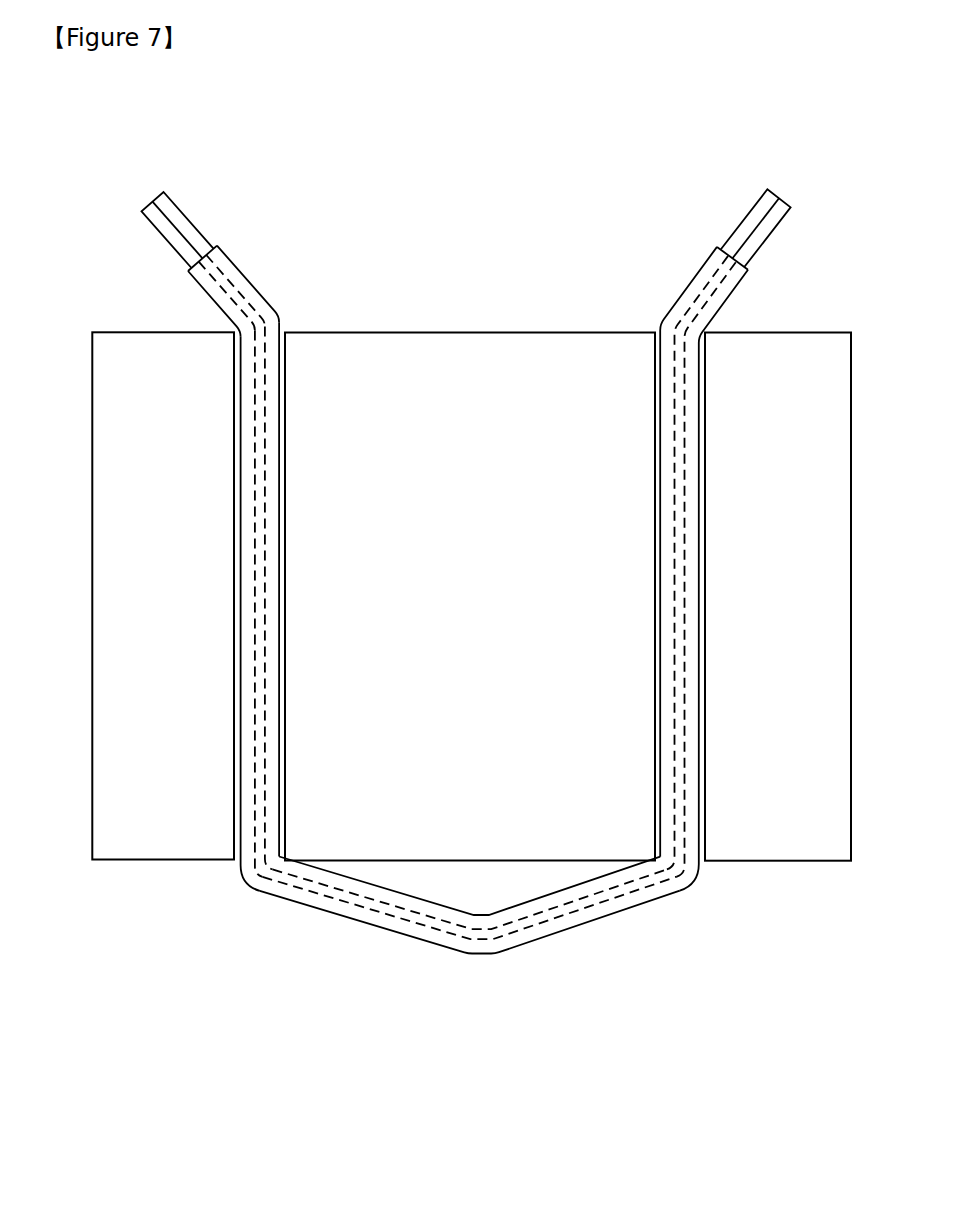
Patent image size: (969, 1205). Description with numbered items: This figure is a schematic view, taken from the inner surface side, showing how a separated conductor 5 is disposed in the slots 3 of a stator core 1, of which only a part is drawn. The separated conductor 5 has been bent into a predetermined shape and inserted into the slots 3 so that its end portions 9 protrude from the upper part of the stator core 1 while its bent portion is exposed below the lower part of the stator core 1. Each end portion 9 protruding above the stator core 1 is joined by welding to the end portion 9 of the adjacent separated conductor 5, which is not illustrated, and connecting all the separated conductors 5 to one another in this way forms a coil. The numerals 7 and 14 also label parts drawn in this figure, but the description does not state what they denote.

The stator core 1 is at (483, 345).
The slot 3 is at (705, 805).
The separated conductor 5 is at (477, 950).
The heating tube 7 is at (468, 637).
The end portion 9 is at (163, 192).
The tube connection portion 14 is at (245, 277).